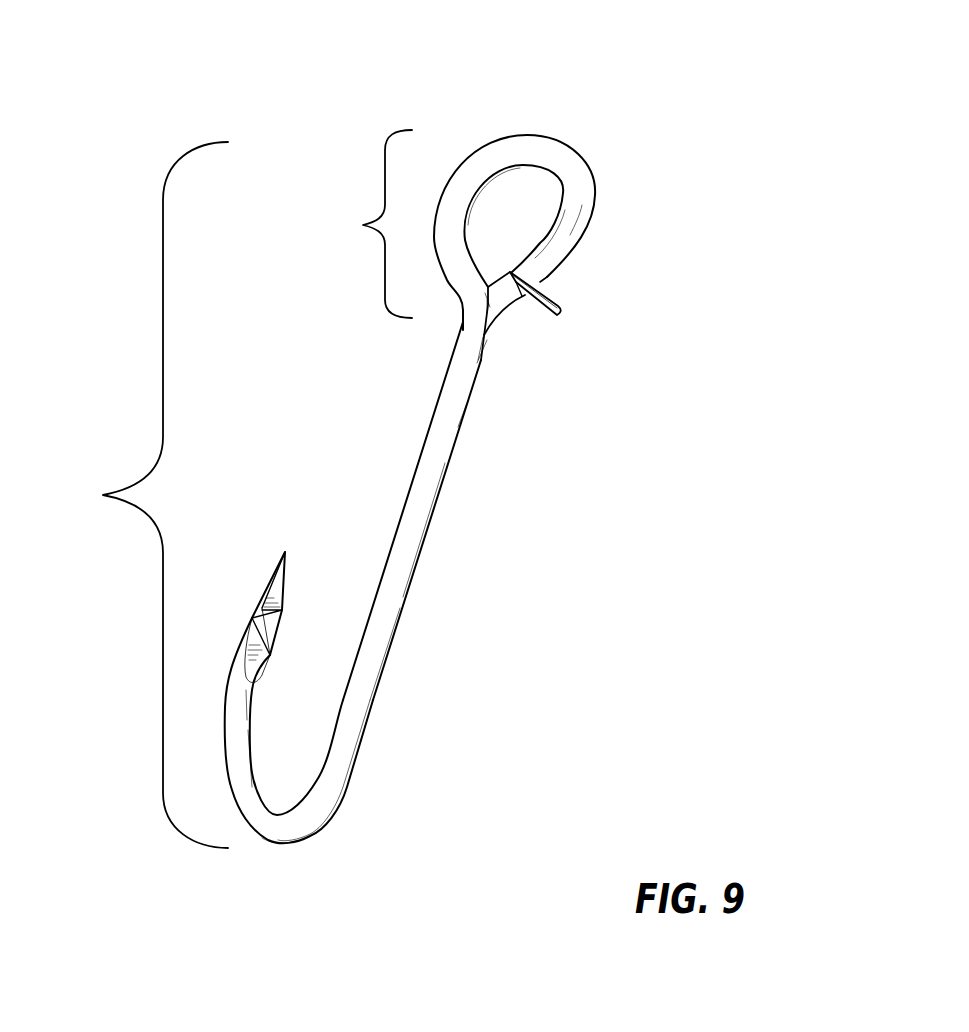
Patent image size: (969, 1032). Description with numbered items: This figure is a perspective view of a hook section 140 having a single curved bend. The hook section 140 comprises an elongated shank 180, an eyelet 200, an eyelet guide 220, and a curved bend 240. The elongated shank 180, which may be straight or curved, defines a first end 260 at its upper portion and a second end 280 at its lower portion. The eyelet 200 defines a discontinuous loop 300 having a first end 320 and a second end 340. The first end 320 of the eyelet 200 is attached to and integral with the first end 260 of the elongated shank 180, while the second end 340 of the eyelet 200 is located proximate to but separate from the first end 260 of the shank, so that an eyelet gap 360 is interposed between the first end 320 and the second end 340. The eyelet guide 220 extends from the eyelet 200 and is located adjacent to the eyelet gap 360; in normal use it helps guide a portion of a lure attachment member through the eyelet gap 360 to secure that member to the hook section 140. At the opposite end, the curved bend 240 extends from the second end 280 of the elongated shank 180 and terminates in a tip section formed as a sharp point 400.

The hook section 140 is at (103, 495).
The eyelet 200 is at (364, 225).
The discontinuous loop 300 is at (500, 148).
The second end of the eyelet 340 is at (543, 276).
The eyelet guide 220 is at (560, 298).
The first end of the elongated shank 260 is at (467, 330).
The eyelet gap 360 is at (525, 295).
The first end of the eyelet 320 is at (520, 300).
The elongated shank 180 is at (407, 598).
The second end of the elongated shank 280 is at (355, 768).
The curved bend 240 is at (285, 828).
The sharp point 400 is at (289, 545).